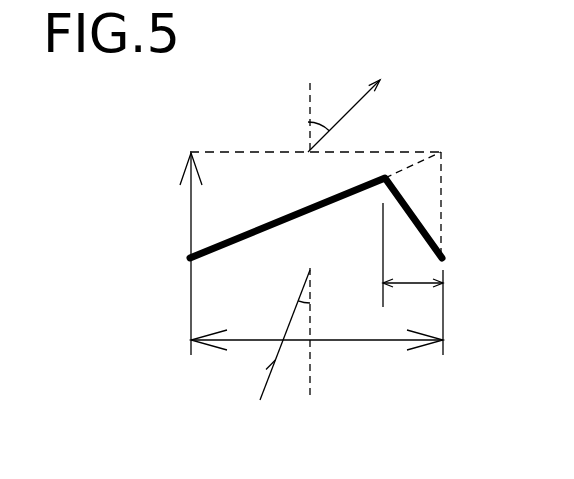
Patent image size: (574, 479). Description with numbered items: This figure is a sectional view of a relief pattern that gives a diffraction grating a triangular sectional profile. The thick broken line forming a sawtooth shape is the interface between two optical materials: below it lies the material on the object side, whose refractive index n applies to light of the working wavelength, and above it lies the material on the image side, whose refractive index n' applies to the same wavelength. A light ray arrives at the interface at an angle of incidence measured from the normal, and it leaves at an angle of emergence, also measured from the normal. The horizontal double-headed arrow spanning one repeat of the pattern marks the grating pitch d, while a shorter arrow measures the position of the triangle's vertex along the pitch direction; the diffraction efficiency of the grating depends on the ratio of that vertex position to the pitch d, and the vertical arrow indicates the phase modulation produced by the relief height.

The grating pitch d is at (317, 352).
The refractive index of object-side optical material n is at (315, 250).
The refractive index of image-side optical material n' is at (242, 198).